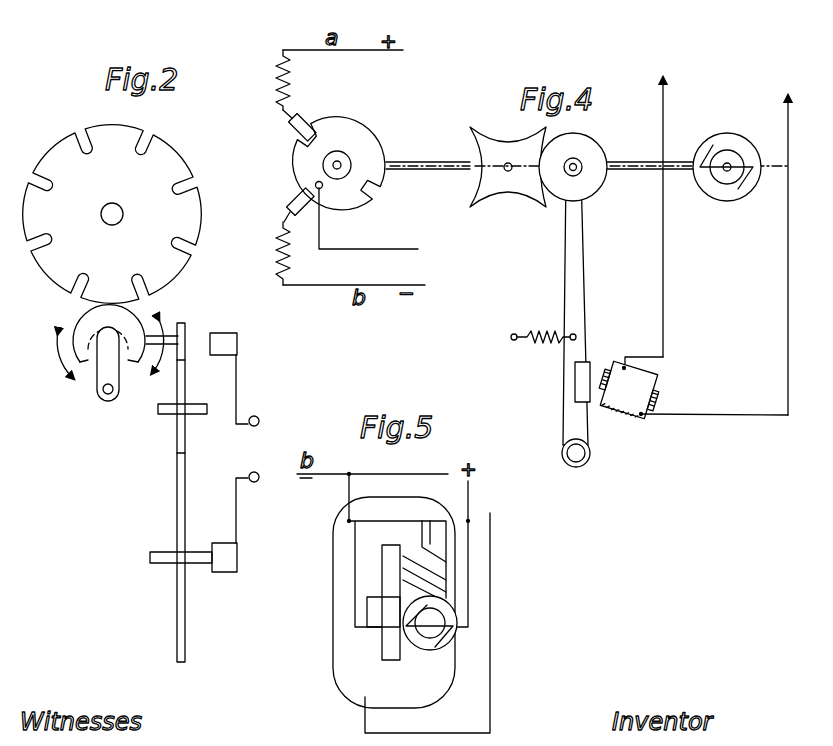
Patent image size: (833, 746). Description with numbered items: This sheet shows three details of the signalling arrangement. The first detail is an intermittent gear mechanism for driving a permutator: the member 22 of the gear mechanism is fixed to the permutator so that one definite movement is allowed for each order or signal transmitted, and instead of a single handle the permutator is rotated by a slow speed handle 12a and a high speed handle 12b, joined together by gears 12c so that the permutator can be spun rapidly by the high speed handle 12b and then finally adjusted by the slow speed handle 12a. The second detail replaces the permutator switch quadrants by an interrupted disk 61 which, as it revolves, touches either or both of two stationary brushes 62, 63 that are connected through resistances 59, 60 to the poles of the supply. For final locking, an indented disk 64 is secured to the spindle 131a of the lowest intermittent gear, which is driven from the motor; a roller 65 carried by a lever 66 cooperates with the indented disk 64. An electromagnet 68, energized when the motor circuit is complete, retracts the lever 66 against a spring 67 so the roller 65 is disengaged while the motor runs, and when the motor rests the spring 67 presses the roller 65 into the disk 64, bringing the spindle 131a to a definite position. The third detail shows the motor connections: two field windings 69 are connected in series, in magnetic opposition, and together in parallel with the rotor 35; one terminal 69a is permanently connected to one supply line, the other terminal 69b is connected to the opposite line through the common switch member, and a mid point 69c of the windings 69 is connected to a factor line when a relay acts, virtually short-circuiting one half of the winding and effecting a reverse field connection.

In FIG. 2, the member of the gear mechanism 22 is at (123, 212).
In FIG. 2, the slow speed handle 12a is at (242, 377).
In FIG. 2, the high speed handle 12b is at (238, 518).
In FIG. 2, the gears 12c is at (177, 361).
In FIG. 4, the resistance 59 is at (290, 78).
In FIG. 4, the resistance 60 is at (276, 250).
In FIG. 4, the interrupted disk 61 is at (355, 183).
In FIG. 4, the stationary brush 62 is at (291, 126).
In FIG. 4, the stationary brush 63 is at (294, 198).
In FIG. 4, the spindle 131a is at (432, 158).
In FIG. 4, the indented disk 64 is at (518, 190).
In FIG. 4, the roller 65 is at (592, 190).
In FIG. 4, the lever 66 is at (572, 260).
In FIG. 4, the spring 67 is at (536, 336).
In FIG. 4, the electromagnet 68 is at (691, 389).
In FIG. 4, the rotor 35 is at (727, 185).
In FIG. 5, the rotor 35 is at (428, 632).
In FIG. 5, the windings 69 is at (382, 553).
In FIG. 5, the terminal 69a is at (349, 521).
In FIG. 5, the terminal 69b is at (468, 521).
In FIG. 5, the mid point 69c is at (395, 594).